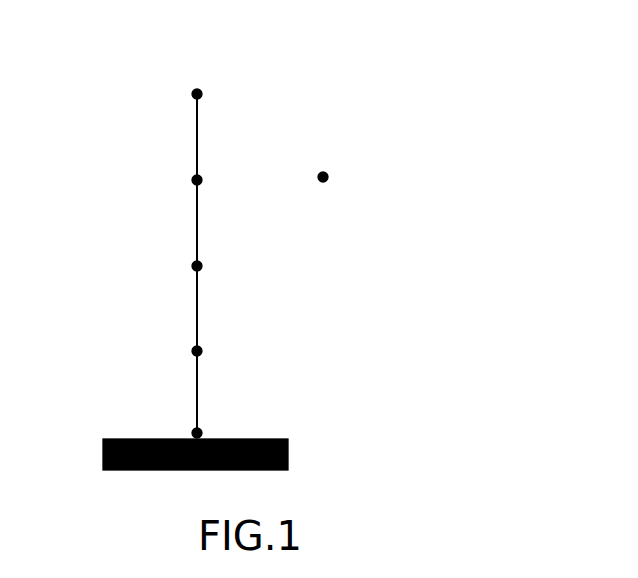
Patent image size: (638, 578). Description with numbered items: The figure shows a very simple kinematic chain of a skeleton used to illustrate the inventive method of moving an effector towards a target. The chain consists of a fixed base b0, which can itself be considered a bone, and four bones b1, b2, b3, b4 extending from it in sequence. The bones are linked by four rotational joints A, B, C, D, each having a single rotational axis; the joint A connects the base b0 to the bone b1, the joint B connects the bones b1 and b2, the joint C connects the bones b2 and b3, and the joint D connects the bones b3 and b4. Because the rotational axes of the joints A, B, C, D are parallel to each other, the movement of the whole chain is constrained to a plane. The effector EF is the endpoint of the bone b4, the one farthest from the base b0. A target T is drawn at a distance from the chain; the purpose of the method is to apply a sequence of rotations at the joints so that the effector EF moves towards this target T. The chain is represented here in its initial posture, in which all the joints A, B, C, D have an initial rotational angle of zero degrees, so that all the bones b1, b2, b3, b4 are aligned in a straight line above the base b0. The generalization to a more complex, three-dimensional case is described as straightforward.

The fixed base b0 is at (122, 439).
The bone b1 is at (197, 393).
The bone b2 is at (197, 308).
The bone b3 is at (197, 230).
The bone b4 is at (197, 138).
The rotational joint A is at (191, 433).
The rotational joint B is at (191, 351).
The rotational joint C is at (191, 265).
The rotational joint D is at (191, 179).
The effector EF is at (200, 94).
The target T is at (333, 165).